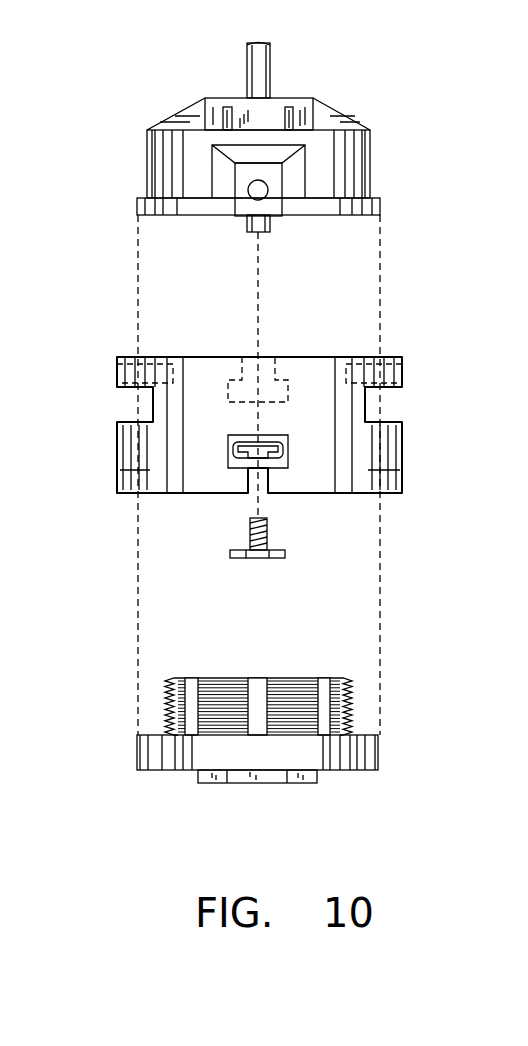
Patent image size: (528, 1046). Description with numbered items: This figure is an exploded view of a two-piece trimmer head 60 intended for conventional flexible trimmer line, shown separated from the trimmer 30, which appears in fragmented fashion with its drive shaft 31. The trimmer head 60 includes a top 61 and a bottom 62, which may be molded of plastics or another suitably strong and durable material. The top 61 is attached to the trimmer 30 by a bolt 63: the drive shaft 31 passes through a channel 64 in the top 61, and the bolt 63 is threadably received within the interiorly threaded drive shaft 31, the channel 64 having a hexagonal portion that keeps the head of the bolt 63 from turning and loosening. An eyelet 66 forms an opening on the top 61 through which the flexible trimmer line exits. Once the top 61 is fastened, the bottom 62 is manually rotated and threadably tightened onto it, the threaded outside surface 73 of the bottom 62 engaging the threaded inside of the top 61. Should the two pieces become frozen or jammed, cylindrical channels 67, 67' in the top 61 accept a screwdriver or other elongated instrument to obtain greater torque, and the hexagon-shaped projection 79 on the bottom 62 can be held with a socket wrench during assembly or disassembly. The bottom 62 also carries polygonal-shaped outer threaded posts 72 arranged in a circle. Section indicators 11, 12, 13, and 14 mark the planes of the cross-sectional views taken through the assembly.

The trimmer 30 is at (383, 107).
The drive shaft 31 is at (267, 227).
The trimmer head 60 is at (435, 223).
The top 61 is at (248, 390).
The bottom 62 is at (259, 724).
The bolt 63 is at (268, 540).
The channel 64 is at (266, 360).
The eyelet 66 is at (282, 432).
The cylindrical channel 67 is at (411, 366).
The cylindrical channel 67' is at (90, 365).
The outer threaded posts 72 is at (308, 685).
The outside surface 73 is at (208, 705).
The hexagon-shaped projection 79 is at (198, 778).
The section line 11- 11 is at (457, 602).
The section line 12- 12 is at (68, 467).
The section line 13- 13 is at (505, 828).
The section line 14- 14 is at (511, 282).